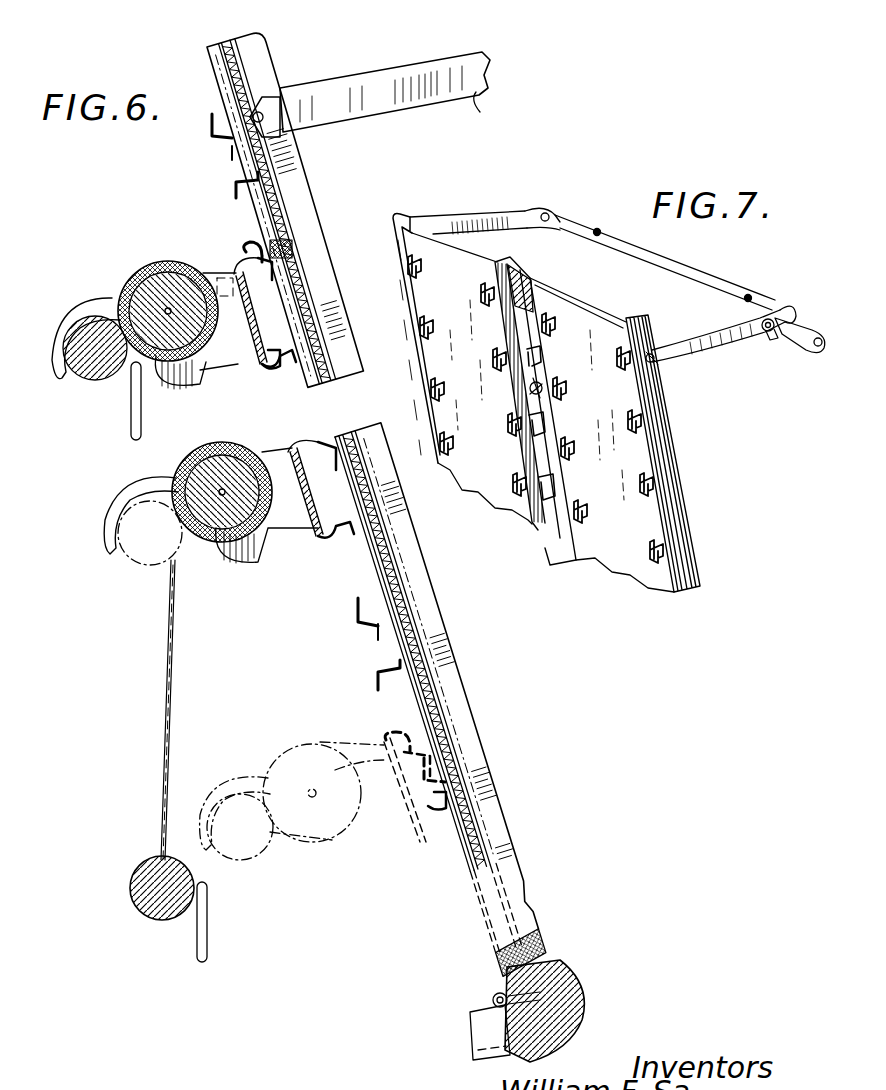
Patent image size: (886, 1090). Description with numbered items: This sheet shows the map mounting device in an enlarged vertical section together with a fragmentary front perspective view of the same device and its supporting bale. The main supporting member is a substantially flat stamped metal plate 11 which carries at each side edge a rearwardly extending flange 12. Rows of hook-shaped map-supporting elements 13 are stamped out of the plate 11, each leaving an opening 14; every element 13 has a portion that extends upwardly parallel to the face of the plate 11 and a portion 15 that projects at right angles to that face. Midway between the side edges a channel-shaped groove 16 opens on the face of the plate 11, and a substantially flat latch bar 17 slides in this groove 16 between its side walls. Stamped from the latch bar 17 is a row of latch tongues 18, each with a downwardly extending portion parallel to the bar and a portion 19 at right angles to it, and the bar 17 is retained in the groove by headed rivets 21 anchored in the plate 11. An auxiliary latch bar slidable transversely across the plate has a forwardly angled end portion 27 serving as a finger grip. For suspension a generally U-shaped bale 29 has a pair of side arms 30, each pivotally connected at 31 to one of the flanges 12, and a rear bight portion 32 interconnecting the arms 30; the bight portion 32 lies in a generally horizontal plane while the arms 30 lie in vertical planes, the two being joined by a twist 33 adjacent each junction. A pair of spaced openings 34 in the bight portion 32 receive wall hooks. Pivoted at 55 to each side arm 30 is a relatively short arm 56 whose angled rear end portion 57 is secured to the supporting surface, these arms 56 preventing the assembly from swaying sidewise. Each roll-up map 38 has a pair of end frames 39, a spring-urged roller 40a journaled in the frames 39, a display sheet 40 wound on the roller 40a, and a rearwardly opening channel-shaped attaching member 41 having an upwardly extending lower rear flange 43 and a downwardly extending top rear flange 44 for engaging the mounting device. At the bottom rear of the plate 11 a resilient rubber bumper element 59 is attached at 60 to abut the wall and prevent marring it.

In FIG. 7, the main supporting member or plate 11 is at (640, 570).
In FIG. 6, the flange 12 is at (300, 194).
In FIG. 7, the flange 12 is at (405, 218).
In FIG. 6, the map-supporting element 13 is at (212, 126).
In FIG. 7, the map-supporting element 13 is at (414, 270).
In FIG. 7, the opening 14 is at (424, 270).
In FIG. 6, the right-angled portion 15 is at (232, 150).
In FIG. 7, the channel-shaped groove 16 is at (514, 274).
In FIG. 7, the latch bar 17 is at (520, 322).
In FIG. 6, the latch tongue 18 is at (236, 200).
In FIG. 7, the latch tongue 18 is at (538, 498).
In FIG. 6, the right-angled portion of latch tongue 19 is at (285, 142).
In FIG. 7, the right-angled portion of latch tongue 19 is at (526, 420).
In FIG. 6, the headed rivet 21 is at (296, 246).
In FIG. 6, the forwardly angled end portion 27 is at (478, 1026).
In FIG. 6, the U-shaped member or bale 29 is at (430, 46).
In FIG. 7, the U-shaped member or bale 29 is at (676, 250).
In FIG. 6, the side arm 30 is at (459, 113).
In FIG. 7, the side arm 30 is at (482, 226).
In FIG. 7, the pivotal connection 31 is at (656, 360).
In FIG. 7, the rear or bight portion 32 is at (690, 272).
In FIG. 7, the twist 33 is at (552, 212).
In FIG. 7, the opening 34 is at (598, 228).
In FIG. 6, the roll-up map 38 is at (162, 388).
In FIG. 6, the end frame 39 is at (204, 382).
In FIG. 6, the roll-up map or display sheet 40 is at (152, 268).
In FIG. 6, the spring-urged roller 40a is at (160, 296).
In FIG. 6, the channel-shaped attaching member 41 is at (352, 878).
In FIG. 6, the lower rear flange 43 is at (302, 360).
In FIG. 6, the top rear flange 44 is at (276, 276).
In FIG. 7, the pivotal connection 55 is at (760, 322).
In FIG. 7, the short arm 56 is at (790, 340).
In FIG. 7, the angled rear end portion 57 is at (820, 328).
In FIG. 6, the resilient or rubber bumper element 59 is at (582, 996).
In FIG. 6, the bumper attachment point 60 is at (496, 996).